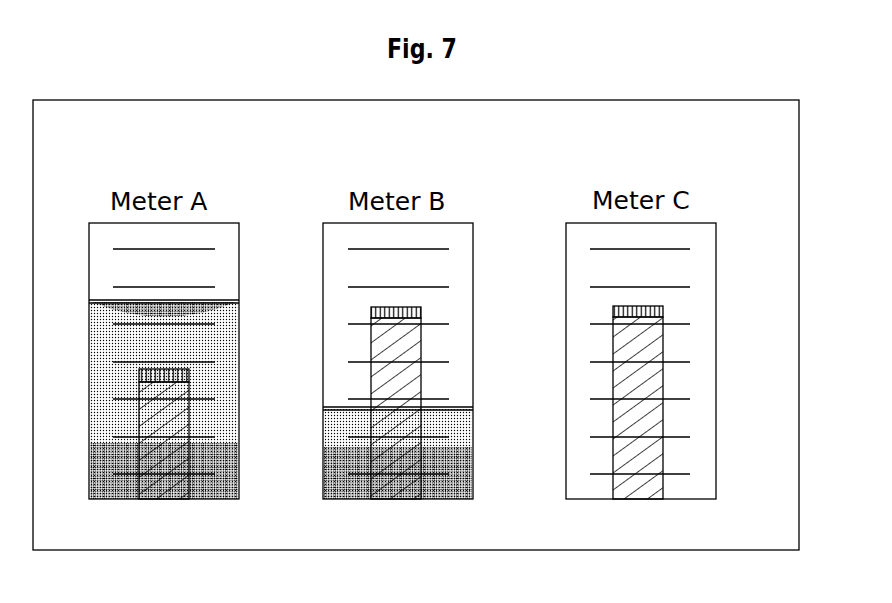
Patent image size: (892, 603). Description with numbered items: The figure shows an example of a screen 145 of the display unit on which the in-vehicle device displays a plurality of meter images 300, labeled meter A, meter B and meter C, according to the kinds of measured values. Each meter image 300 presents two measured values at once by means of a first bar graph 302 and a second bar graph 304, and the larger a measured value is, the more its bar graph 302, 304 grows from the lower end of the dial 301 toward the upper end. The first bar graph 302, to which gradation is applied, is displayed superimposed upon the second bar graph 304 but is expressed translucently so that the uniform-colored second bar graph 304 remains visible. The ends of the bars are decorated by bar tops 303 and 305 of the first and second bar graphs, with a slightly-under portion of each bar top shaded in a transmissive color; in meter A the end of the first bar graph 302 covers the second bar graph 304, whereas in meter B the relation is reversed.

The screen 145 is at (563, 100).
The meter image 300 is at (239, 235).
The dial 301 is at (233, 277).
The first bar graph 302 is at (250, 307).
The bar top of first bar graph 303 is at (239, 300).
The second bar graph 304 is at (153, 427).
The bar top of second bar graph 305 is at (139, 372).